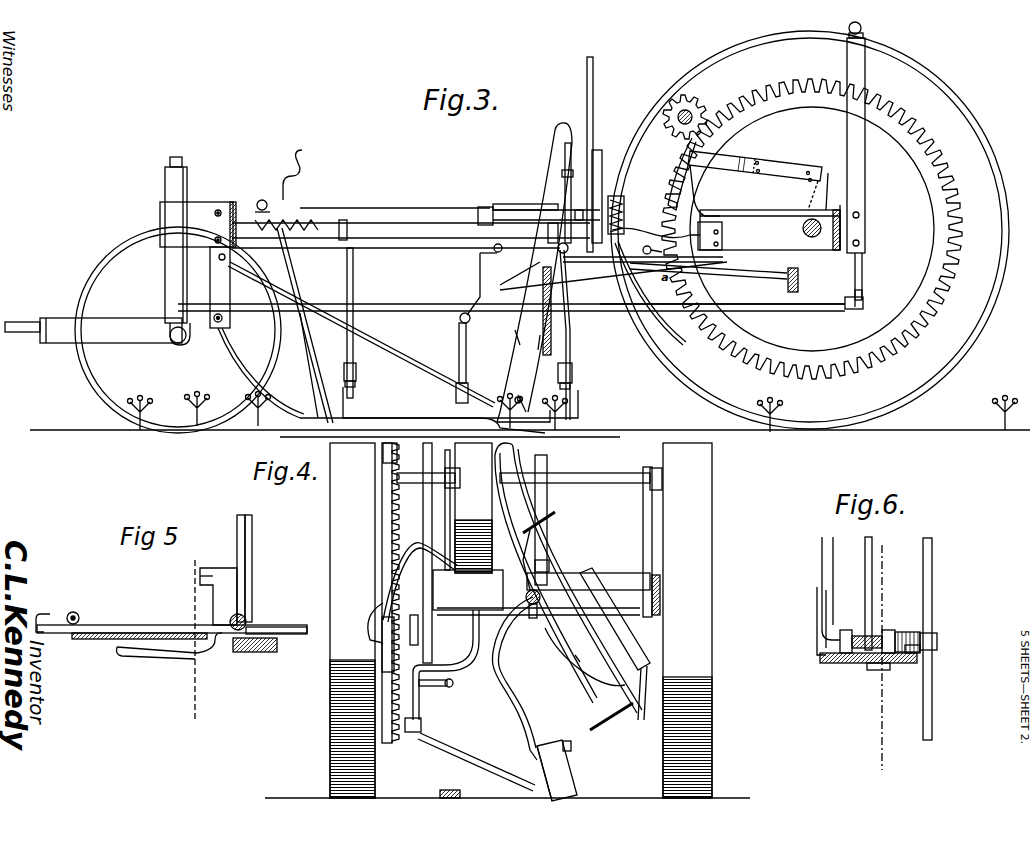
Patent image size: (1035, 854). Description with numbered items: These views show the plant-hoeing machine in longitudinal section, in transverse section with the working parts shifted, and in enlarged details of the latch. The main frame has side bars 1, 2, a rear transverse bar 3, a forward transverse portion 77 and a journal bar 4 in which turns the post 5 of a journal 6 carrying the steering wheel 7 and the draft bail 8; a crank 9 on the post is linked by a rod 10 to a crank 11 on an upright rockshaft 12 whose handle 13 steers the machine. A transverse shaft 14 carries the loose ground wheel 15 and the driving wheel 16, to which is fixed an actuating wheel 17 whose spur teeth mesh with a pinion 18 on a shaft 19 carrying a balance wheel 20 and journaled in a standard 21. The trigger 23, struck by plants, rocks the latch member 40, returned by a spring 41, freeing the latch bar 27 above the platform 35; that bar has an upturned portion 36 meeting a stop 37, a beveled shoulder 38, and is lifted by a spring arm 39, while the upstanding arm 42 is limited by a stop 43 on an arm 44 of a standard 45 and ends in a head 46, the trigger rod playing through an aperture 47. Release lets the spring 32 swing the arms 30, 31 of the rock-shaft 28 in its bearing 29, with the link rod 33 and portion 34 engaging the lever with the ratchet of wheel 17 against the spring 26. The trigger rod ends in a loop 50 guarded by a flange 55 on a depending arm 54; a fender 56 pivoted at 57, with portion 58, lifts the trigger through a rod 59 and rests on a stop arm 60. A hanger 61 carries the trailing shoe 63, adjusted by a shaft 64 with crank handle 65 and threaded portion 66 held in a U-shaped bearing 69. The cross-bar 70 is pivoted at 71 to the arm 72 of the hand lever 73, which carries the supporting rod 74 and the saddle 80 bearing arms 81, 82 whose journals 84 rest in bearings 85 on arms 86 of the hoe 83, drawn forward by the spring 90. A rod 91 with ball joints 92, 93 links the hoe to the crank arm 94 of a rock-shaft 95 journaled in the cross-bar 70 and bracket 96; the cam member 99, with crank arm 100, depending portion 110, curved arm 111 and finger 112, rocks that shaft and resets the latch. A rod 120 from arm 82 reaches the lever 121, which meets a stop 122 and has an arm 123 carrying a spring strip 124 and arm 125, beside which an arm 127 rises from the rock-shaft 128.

In FIG. 3, the side bar 1 is at (418, 207).
In FIG. 4, the side bar 2 is at (660, 578).
In FIG. 3, the rear transverse bar 3 is at (866, 212).
In FIG. 3, the journal bar 4 is at (160, 213).
In FIG. 3, the turning post 5 is at (170, 160).
In FIG. 6, the turning post 5 is at (887, 655).
In FIG. 3, the journal 6 is at (180, 345).
In FIG. 5, the journal 6 is at (192, 643).
In FIG. 3, the steering wheel 7 is at (86, 272).
In FIG. 3, the bail 8 is at (52, 318).
In FIG. 3, the crank 9 is at (176, 307).
In FIG. 3, the rod 10 is at (660, 316).
In FIG. 4, the rod 10 is at (452, 685).
In FIG. 3, the crank 11 is at (863, 305).
In FIG. 4, the crank 11 is at (420, 702).
In FIG. 3, the upright rockshaft 12 is at (862, 276).
In FIG. 4, the upright rockshaft 12 is at (394, 652).
In FIG. 3, the handle 13 is at (863, 29).
In FIG. 3, the transverse shaft 14 is at (802, 228).
In FIG. 4, the left hand ground wheel 15 is at (712, 674).
In FIG. 3, the right hand ground and driving wheel 16 is at (930, 92).
In FIG. 4, the right hand ground and driving wheel 16 is at (330, 691).
In FIG. 3, the actuating wheel 17 is at (866, 146).
In FIG. 4, the actuating wheel 17 is at (382, 529).
In FIG. 3, the pinion 18 is at (702, 106).
In FIG. 4, the pinion 18 is at (385, 485).
In FIG. 3, the transverse shaft 19 is at (678, 134).
In FIG. 4, the balance wheel 20 is at (473, 508).
In FIG. 4, the standard 21 is at (660, 512).
In FIG. 3, the trigger 23 is at (532, 405).
In FIG. 4, the trigger 23 is at (604, 714).
In FIG. 3, the spring 26 is at (216, 313).
In FIG. 3, the latch bar 27 is at (516, 277).
In FIG. 5, the latch bar 27 is at (96, 640).
In FIG. 6, the latch bar 27 is at (880, 632).
In FIG. 3, the vertical rock-shaft 28 is at (735, 206).
In FIG. 3, the bearing 29 is at (698, 236).
In FIG. 3, the arm 30 is at (718, 263).
In FIG. 3, the arm 31 is at (672, 232).
In FIG. 3, the spring 32 is at (722, 224).
In FIG. 3, the link rod 33 is at (672, 308).
In FIG. 4, the vertically disposed portion 34 is at (418, 630).
In FIG. 3, the platform 35 is at (499, 253).
In FIG. 5, the platform 35 is at (160, 625).
In FIG. 6, the platform 35 is at (835, 664).
In FIG. 5, the upwardly directed portion 36 is at (40, 613).
In FIG. 5, the stop 37 is at (78, 613).
In FIG. 5, the beveled shoulder 38 is at (248, 622).
In FIG. 5, the spring arm 39 is at (156, 656).
In FIG. 6, the spring arm 39 is at (885, 671).
In FIG. 5, the rocking latch bar 40 is at (246, 616).
In FIG. 6, the rocking latch bar 40 is at (937, 636).
In FIG. 6, the spring 41 is at (922, 653).
In FIG. 3, the upstanding arm 42 is at (565, 200).
In FIG. 4, the upstanding arm 42 is at (524, 560).
In FIG. 5, the upstanding arm 42 is at (237, 568).
In FIG. 6, the upstanding arm 42 is at (822, 559).
In FIG. 3, the stop 43 is at (552, 223).
In FIG. 5, the stop 43 is at (253, 573).
In FIG. 5, the arm 44 is at (200, 578).
In FIG. 5, the standard 45 is at (205, 596).
In FIG. 6, the standard 45 is at (817, 620).
In FIG. 3, the lateral head 46 is at (562, 173).
In FIG. 4, the lateral head 46 is at (557, 512).
In FIG. 6, the aperture 47 is at (930, 631).
In FIG. 3, the loop 50 is at (562, 125).
In FIG. 4, the loop 50 is at (522, 452).
In FIG. 3, the depending arm 54 is at (540, 341).
In FIG. 3, the flange 55 is at (543, 292).
In FIG. 4, the flange 55 is at (614, 620).
In FIG. 3, the fender 56 is at (215, 257).
In FIG. 4, the fender 56 is at (585, 661).
In FIG. 3, the pivot 57 is at (307, 313).
In FIG. 3, the fender portion 58 is at (577, 431).
In FIG. 3, the rod 59 is at (513, 338).
In FIG. 4, the stop arm 60 is at (576, 657).
In FIG. 3, the hanger 61 is at (230, 294).
In FIG. 3, the trailing shoe 63 is at (290, 422).
In FIG. 4, the trailing shoe 63 is at (447, 790).
In FIG. 3, the shaft 64 is at (310, 352).
In FIG. 3, the crank handle 65 is at (302, 156).
In FIG. 3, the threaded portion 66 is at (288, 190).
In FIG. 3, the U-shaped bearing 69 is at (257, 203).
In FIG. 3, the cross-bar 70 is at (535, 209).
In FIG. 4, the cross-bar 70 is at (620, 573).
In FIG. 4, the pivot point 71 is at (538, 589).
In FIG. 4, the lower angularly disposed arm 72 is at (538, 604).
In FIG. 3, the hand lever 73 is at (587, 80).
In FIG. 4, the hand lever 73 is at (548, 470).
In FIG. 3, the longitudinal supporting rod 74 is at (345, 220).
In FIG. 4, the longitudinal supporting rod 74 is at (532, 618).
In FIG. 3, the forward transverse portion 77 is at (232, 210).
In FIG. 3, the saddle 80 is at (380, 222).
In FIG. 4, the saddle 80 is at (549, 563).
In FIG. 3, the arm 81 is at (353, 293).
In FIG. 3, the arm 82 is at (571, 337).
In FIG. 4, the arm 82 is at (508, 686).
In FIG. 3, the hoe 83 is at (407, 388).
In FIG. 4, the hoe 83 is at (468, 753).
In FIG. 3, the journals 84 is at (356, 385).
In FIG. 4, the journals 84 is at (572, 746).
In FIG. 3, the bearings 85 is at (356, 372).
In FIG. 4, the bearings 85 is at (555, 745).
In FIG. 3, the arms 86 is at (343, 401).
In FIG. 4, the arms 86 is at (575, 773).
In FIG. 3, the retractile spring 90 is at (305, 220).
In FIG. 3, the rod 91 is at (467, 359).
In FIG. 3, the ball and socket joint 92 is at (469, 391).
In FIG. 3, the ball and socket joint 93 is at (462, 313).
In FIG. 3, the crank arm 94 is at (478, 258).
In FIG. 3, the rock-shaft 95 is at (500, 205).
In FIG. 3, the journal bracket 96 is at (480, 210).
In FIG. 4, the journal bracket 96 is at (468, 590).
In FIG. 3, the cam member 99 is at (598, 148).
In FIG. 3, the crank arm 100 is at (614, 196).
In FIG. 3, the depending portion 110 is at (568, 252).
In FIG. 4, the arm 111 is at (383, 563).
In FIG. 4, the finger 112 is at (366, 618).
In FIG. 3, the rod 120 is at (735, 271).
In FIG. 3, the lever 121 is at (864, 285).
In FIG. 3, the stop 122 is at (788, 280).
In FIG. 3, the arm 123 is at (823, 180).
In FIG. 3, the spring strip 124 is at (781, 164).
In FIG. 3, the arm 125 is at (732, 160).
In FIG. 3, the arm 127 is at (700, 190).
In FIG. 3, the horizontal rock-shaft 128 is at (612, 277).